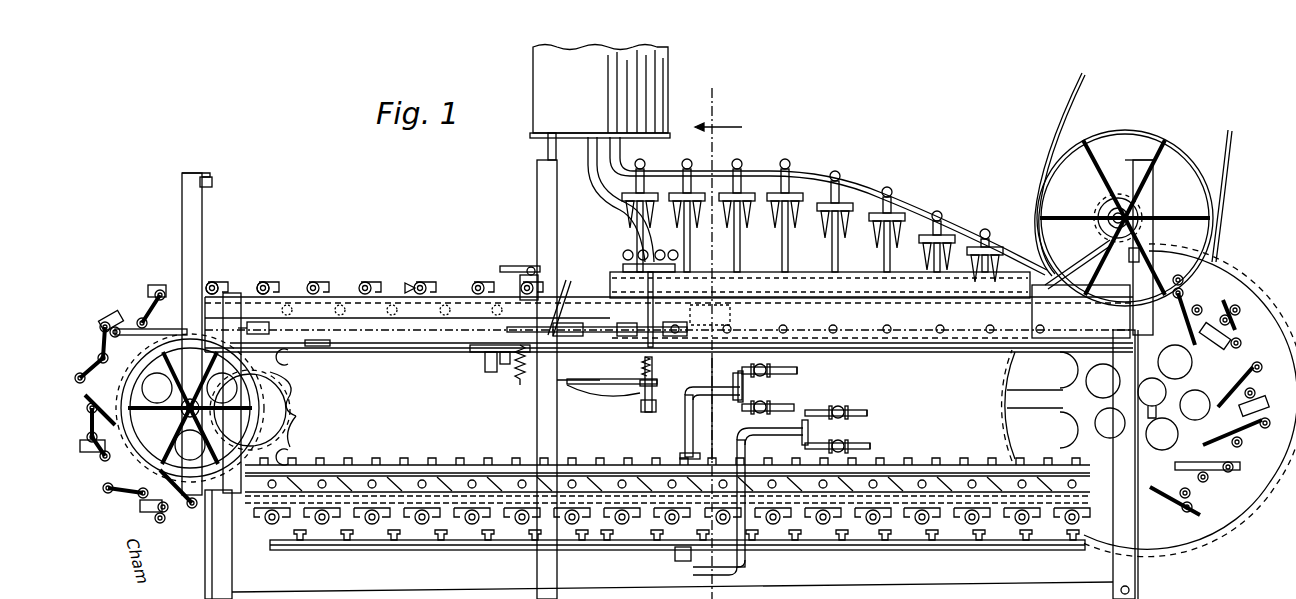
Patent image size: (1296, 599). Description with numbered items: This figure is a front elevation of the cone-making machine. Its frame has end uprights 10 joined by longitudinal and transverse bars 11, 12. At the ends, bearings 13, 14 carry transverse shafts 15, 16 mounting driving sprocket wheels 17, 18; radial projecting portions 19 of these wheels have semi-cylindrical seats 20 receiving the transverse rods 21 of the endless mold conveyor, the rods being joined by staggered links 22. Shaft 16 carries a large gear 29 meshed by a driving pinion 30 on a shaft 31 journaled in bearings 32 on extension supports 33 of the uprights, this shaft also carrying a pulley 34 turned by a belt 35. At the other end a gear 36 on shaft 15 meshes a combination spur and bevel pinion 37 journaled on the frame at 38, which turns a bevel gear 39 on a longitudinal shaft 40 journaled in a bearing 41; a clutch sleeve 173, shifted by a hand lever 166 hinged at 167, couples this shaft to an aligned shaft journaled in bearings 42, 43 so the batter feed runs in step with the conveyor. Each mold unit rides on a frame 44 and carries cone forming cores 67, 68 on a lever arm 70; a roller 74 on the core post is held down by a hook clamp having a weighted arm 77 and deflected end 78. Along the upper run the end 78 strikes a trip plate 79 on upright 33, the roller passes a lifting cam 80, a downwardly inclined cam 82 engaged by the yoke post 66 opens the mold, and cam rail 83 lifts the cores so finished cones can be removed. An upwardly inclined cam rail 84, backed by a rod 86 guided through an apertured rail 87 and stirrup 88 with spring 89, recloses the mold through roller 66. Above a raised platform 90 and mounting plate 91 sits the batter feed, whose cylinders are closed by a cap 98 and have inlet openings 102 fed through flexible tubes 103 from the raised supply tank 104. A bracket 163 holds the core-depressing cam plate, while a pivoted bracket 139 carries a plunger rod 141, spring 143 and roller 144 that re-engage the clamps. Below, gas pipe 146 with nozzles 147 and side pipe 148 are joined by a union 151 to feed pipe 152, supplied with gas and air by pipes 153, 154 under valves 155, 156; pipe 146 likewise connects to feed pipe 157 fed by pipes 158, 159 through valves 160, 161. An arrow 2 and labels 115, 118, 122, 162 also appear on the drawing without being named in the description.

The direction arrow 2 is at (725, 343).
The uprights 10 is at (207, 551).
The longitudinal bars 11 is at (566, 384).
The transverse bars 12 is at (475, 352).
The bearings 13 is at (268, 418).
The bearings 14 is at (1148, 397).
The transverse shaft 15 is at (182, 410).
The transverse shaft 16 is at (1138, 395).
The driving sprocket wheels 17 is at (283, 388).
The driving sprocket wheels 18 is at (1070, 420).
The radial projecting portions 19 is at (298, 414).
The semi-cylindrical seats 20 is at (303, 402).
The transverse parallel rods 21 is at (140, 300).
The links 22 is at (1232, 422).
The large gear 29 is at (1235, 262).
The driving pinion 30 is at (1103, 232).
The hub 31 is at (1100, 210).
The bearings 32 is at (1112, 210).
The extension supports 33 is at (1154, 192).
The pulley 34 is at (1144, 126).
The belt 35 is at (1068, 120).
The gear 36 is at (292, 357).
The combination spur and bevel pinion 37 is at (215, 282).
The frame journal 38 is at (322, 347).
The bevel gear 39 is at (262, 282).
The longitudinal shaft 40 is at (405, 340).
The bearing 41 is at (265, 322).
The bearing 42 is at (622, 326).
The bearing 43 is at (720, 407).
The frame 44 is at (410, 282).
The yoke post roller 66 is at (788, 330).
The cone forming core 67 is at (796, 226).
The cone forming core 68 is at (772, 225).
The lever arm 70 is at (898, 258).
The roller 74 is at (645, 162).
The weighted arm 77 is at (388, 465).
The upper deflected end 78 is at (320, 282).
The trip plate 79 is at (1140, 256).
The lifting cam 80 is at (1082, 268).
The downwardly inclined cam 82 is at (1046, 312).
The cam rail 83 is at (758, 173).
The upwardly inclined cam rail 84 is at (780, 328).
The rod 86 is at (654, 367).
The apertured rail 87 is at (658, 383).
The stirrup 88 is at (657, 402).
The spring 89 is at (656, 362).
The raised platform 90 is at (764, 280).
The plate 91 is at (678, 268).
The cap 98 is at (640, 252).
The inlet opening 102 is at (625, 225).
The flexible tube 103 is at (612, 195).
The batter supply tank 104 is at (600, 92).
The rod 115 is at (668, 309).
The cam 118 is at (709, 315).
The gauge 122 is at (623, 256).
The bracket 139 is at (488, 370).
The plunger rod 141 is at (521, 387).
The spring 143 is at (505, 366).
The roller 144 is at (492, 353).
The gas pipe 146 is at (442, 550).
The nozzles 147 is at (390, 537).
The gas pipe 148 is at (450, 465).
The union 151 is at (688, 454).
The feed pipe 152 is at (694, 412).
The pipe 153 is at (805, 368).
The pipe 154 is at (796, 406).
The valve 155 is at (762, 376).
The valve 156 is at (768, 399).
The feed pipe 157 is at (747, 455).
The pipe 158 is at (860, 408).
The pipe 159 is at (872, 446).
The valve 160 is at (842, 417).
The valve 161 is at (842, 440).
The bracket 162 is at (528, 270).
The bracket 163 is at (531, 265).
The hand lever 166 is at (562, 270).
The hinge support 167 is at (575, 380).
The clutch sleeve 173 is at (520, 303).